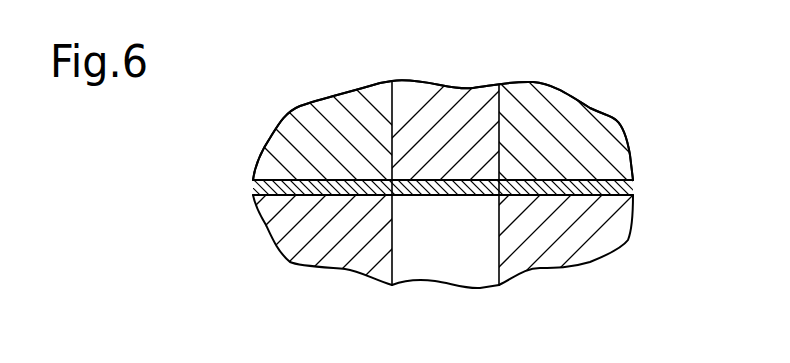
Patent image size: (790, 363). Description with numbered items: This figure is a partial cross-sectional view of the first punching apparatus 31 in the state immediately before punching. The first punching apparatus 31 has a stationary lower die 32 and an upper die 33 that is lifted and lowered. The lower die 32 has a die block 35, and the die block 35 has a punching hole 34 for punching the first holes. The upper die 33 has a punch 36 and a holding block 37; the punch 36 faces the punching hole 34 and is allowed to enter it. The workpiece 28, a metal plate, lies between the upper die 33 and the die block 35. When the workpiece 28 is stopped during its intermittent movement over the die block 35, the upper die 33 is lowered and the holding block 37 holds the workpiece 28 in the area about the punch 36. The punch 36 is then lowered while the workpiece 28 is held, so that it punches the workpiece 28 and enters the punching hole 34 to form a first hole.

The first punching apparatus 31 is at (560, 84).
The upper die 33 is at (325, 100).
The holding block 37 is at (282, 146).
The workpiece 28 is at (633, 191).
The punch 36 is at (438, 176).
The lower die 32 is at (305, 265).
The die block 35 is at (597, 248).
The punching hole 34 is at (393, 267).